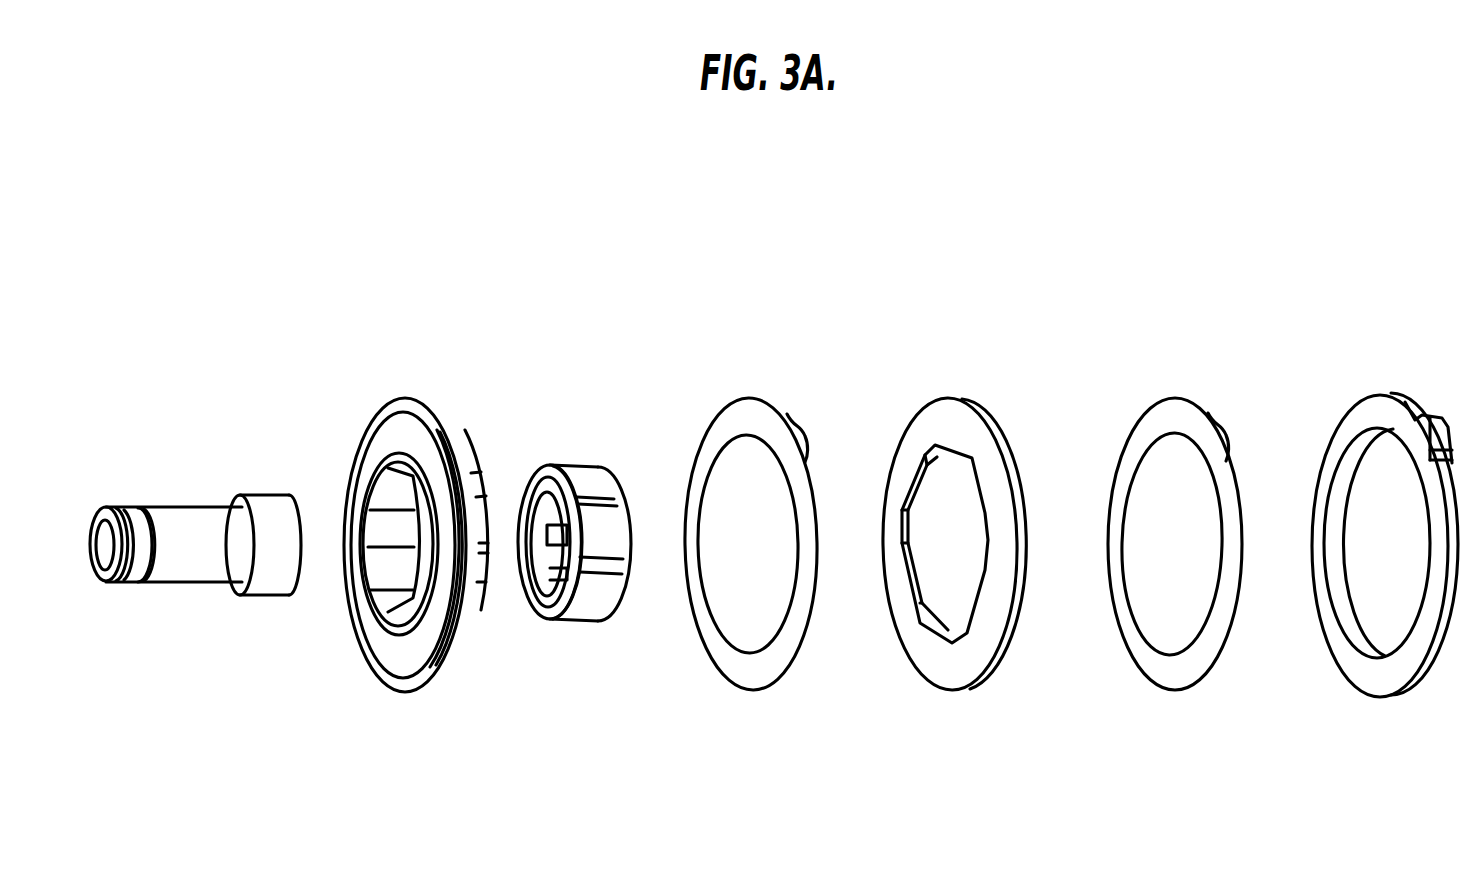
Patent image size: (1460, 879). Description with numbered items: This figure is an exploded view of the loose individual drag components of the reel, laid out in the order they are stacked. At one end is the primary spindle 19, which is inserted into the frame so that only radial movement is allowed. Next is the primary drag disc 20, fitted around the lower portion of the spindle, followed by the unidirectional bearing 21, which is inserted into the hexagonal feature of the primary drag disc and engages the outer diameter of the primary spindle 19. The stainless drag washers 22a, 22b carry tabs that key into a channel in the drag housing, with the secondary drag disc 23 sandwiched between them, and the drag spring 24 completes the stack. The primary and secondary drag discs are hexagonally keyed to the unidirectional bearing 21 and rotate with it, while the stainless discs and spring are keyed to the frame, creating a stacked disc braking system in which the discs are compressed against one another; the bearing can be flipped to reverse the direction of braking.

The primary spindle 19 is at (207, 500).
The primary drag disc 20 is at (398, 412).
The unidirectional bearing 21 is at (560, 480).
The stainless drag washer 22a is at (728, 413).
The secondary drag disc 23 is at (940, 417).
The stainless drag washer 22b is at (1160, 417).
The drag spring 24 is at (1362, 410).